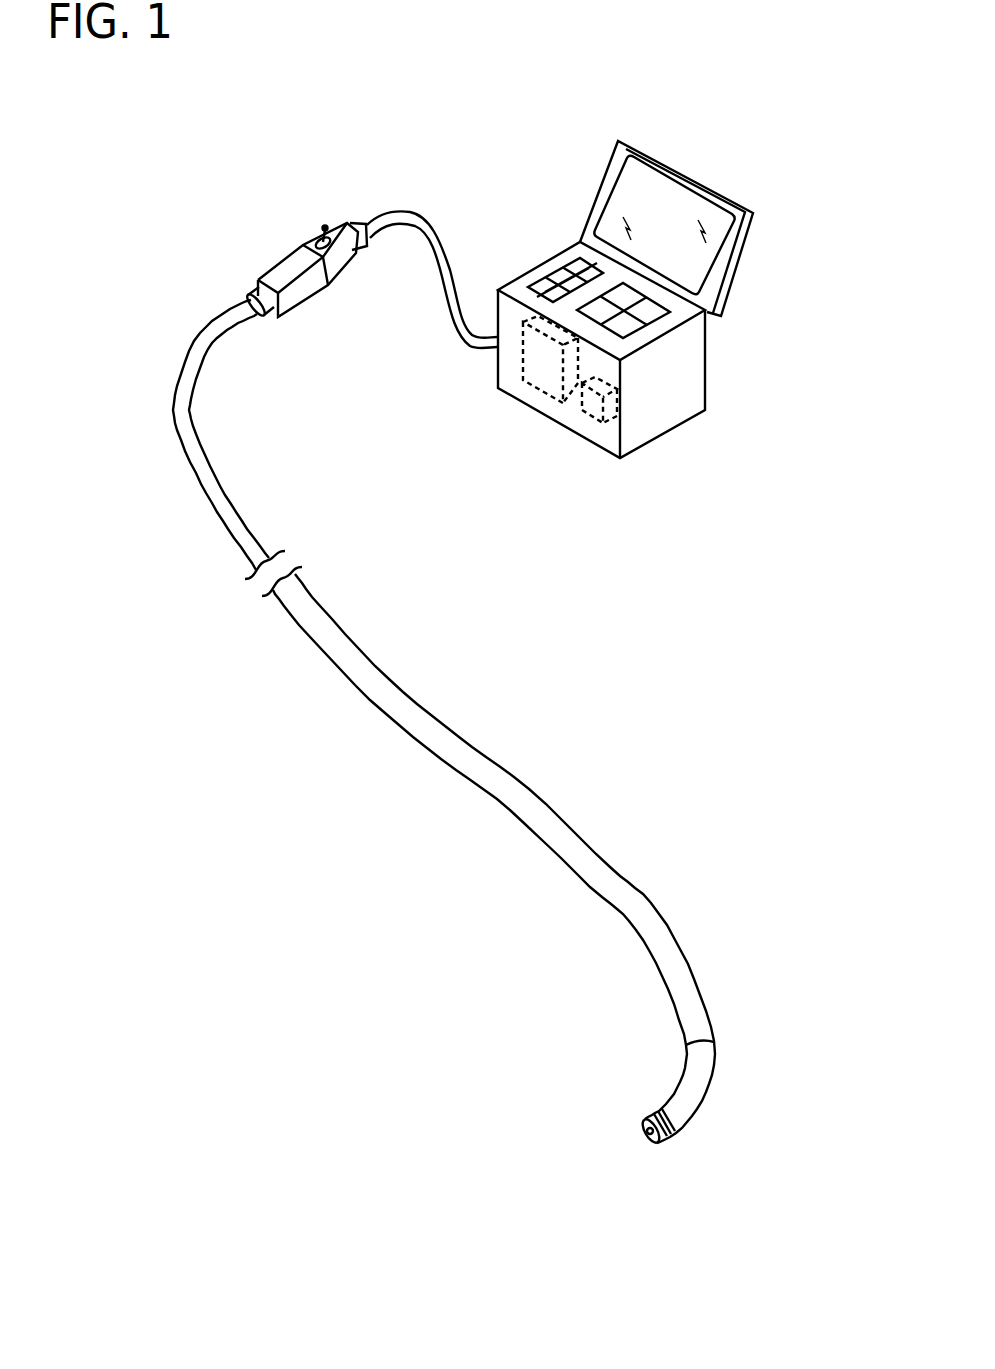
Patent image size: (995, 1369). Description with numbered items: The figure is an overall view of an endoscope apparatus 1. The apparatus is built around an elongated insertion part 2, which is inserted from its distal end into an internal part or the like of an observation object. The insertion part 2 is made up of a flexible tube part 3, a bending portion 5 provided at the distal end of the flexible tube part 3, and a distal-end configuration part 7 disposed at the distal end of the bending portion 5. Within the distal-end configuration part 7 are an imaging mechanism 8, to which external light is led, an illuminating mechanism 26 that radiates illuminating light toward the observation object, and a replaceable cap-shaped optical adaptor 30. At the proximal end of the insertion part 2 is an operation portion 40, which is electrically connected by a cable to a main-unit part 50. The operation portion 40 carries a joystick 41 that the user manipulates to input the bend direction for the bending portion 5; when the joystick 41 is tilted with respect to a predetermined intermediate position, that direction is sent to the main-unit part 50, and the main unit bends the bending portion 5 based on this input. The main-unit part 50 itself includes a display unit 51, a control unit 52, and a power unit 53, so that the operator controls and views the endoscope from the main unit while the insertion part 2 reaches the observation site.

The endoscope apparatus 1 is at (168, 272).
The insertion part 2 is at (630, 862).
The flexible tube part 3 is at (635, 906).
The bending portion 5 is at (685, 1112).
The distal-end configuration part 7 is at (669, 1146).
The imaging mechanism 8 is at (636, 1132).
The illuminating mechanism 26 is at (636, 1148).
The optical adaptor 30 is at (652, 1120).
The operation portion 40 is at (310, 296).
The joystick 41 is at (323, 227).
The main-unit part 50 is at (706, 162).
The display unit 51 is at (612, 212).
The control unit 52 is at (543, 375).
The power unit 53 is at (582, 420).